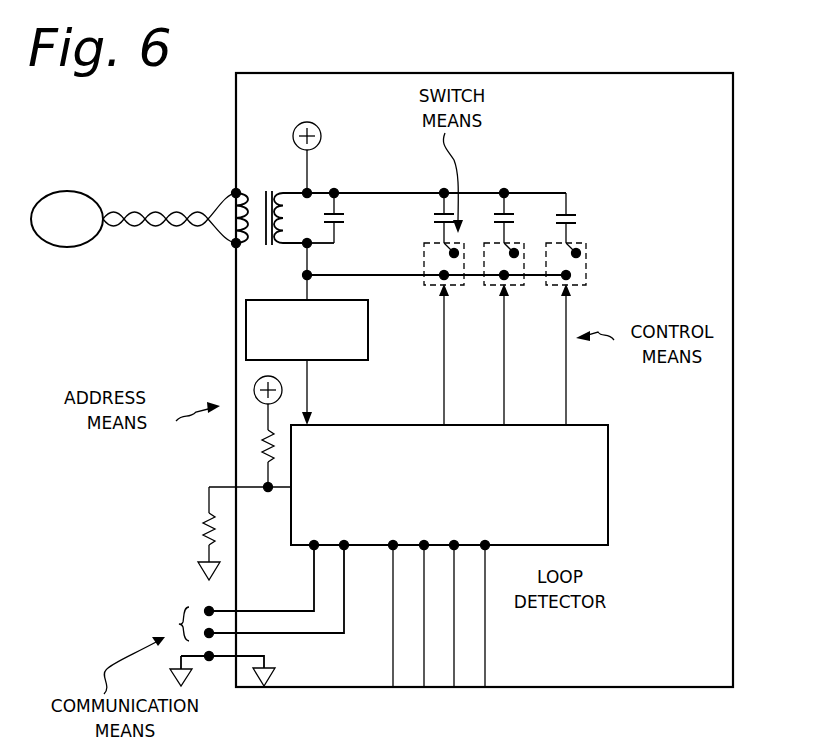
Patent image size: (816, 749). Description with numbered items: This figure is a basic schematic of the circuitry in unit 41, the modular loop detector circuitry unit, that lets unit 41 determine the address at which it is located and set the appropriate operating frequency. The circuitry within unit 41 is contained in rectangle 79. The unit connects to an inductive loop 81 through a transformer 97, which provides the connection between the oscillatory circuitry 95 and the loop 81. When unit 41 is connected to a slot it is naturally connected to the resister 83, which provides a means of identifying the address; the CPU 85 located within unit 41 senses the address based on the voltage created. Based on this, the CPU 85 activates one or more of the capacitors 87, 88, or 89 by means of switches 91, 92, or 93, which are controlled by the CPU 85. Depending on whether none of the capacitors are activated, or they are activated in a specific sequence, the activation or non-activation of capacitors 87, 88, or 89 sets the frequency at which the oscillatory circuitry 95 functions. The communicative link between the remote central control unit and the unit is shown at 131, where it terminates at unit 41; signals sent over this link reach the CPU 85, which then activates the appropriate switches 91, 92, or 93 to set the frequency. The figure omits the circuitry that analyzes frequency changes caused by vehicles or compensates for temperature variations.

The unit 41 is at (168, 112).
The rectangle 79 is at (733, 96).
The inductive loop 81 is at (72, 191).
The resister 83 is at (165, 522).
The CPU 85 is at (608, 462).
The capacitor 87 is at (437, 211).
The capacitor 88 is at (510, 212).
The capacitor 89 is at (574, 212).
The switch 91 is at (464, 273).
The switch 92 is at (520, 252).
The switch 93 is at (586, 260).
The oscillatory circuitry 95 is at (246, 320).
The transformer 97 is at (252, 190).
The communicative link 131 is at (168, 608).